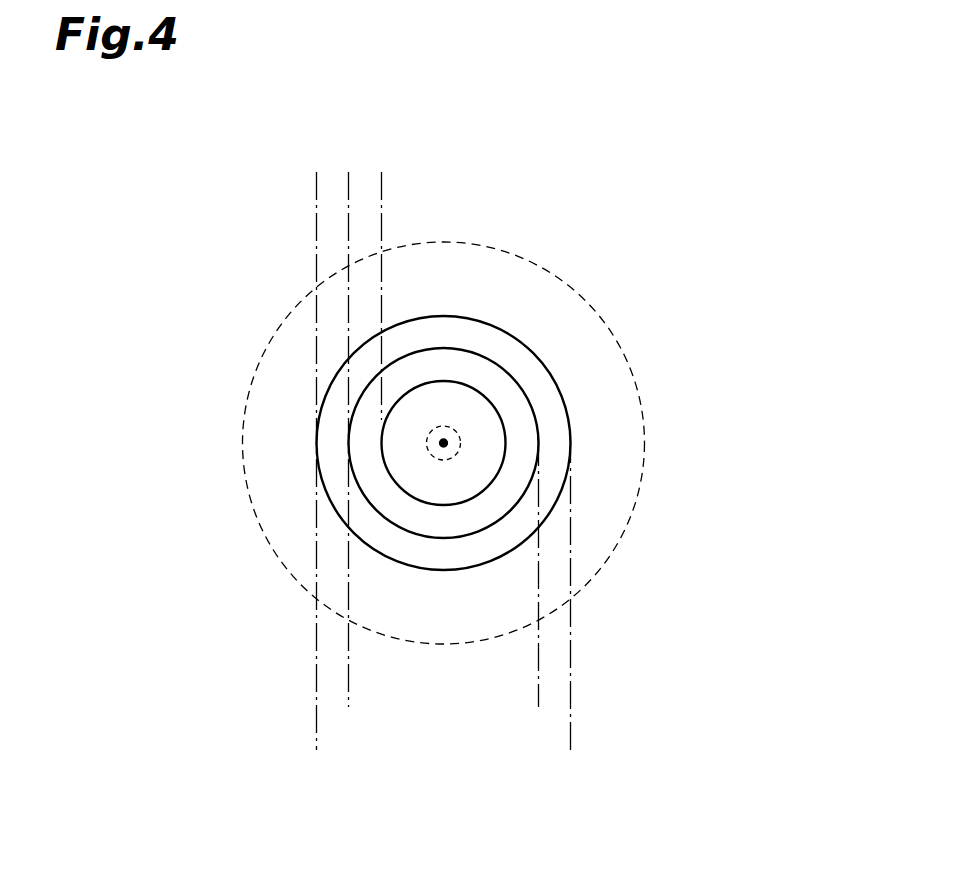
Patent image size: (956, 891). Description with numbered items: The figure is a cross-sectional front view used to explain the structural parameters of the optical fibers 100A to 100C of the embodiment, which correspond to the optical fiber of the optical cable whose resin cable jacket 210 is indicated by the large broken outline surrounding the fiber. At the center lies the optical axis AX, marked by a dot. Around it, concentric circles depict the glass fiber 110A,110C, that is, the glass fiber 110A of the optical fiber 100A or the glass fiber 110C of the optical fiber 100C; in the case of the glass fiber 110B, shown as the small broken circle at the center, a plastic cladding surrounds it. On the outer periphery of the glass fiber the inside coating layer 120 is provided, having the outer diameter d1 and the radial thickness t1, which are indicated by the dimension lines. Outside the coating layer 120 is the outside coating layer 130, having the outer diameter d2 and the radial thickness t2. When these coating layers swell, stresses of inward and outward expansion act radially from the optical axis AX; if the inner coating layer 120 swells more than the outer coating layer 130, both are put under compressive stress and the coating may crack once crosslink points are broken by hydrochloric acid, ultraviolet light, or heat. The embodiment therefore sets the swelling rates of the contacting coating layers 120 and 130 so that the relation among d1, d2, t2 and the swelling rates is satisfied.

The optical fiber 100A is at (557, 410).
The optical fiber 100C is at (557, 410).
The coating layer 130 is at (482, 340).
The coating layer 120 is at (492, 382).
The glass fibers 110A,110C is at (590, 411).
The glass fiber 110A is at (590, 411).
The glass fiber 110C is at (482, 420).
The glass fiber 110B is at (450, 457).
The optical axis AX is at (450, 445).
The cable jacket 210 is at (258, 363).
The thickness of coating layer 120 t1 is at (382, 216).
The thickness of coating layer 130 t2 is at (348, 185).
The outer diameter of coating layer 120 d1 is at (538, 678).
The outer diameter of coating layer 130 d2 is at (570, 737).